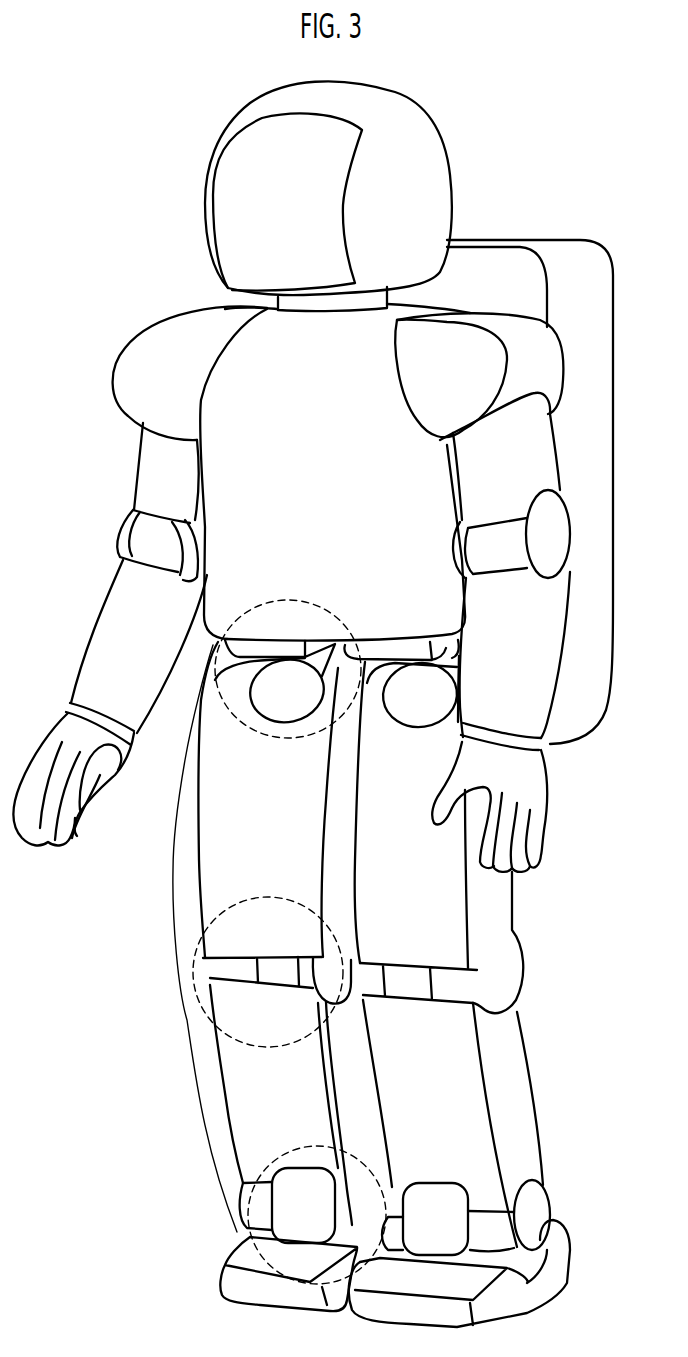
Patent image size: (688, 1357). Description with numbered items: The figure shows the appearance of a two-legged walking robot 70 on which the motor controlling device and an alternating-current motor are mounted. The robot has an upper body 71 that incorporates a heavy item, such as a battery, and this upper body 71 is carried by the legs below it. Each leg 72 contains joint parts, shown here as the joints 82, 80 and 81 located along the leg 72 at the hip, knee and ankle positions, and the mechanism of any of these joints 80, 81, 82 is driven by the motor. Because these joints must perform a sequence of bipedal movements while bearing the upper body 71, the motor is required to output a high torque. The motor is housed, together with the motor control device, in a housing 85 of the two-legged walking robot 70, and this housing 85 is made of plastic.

The two-legged walking robot 70 is at (539, 128).
The upper body 71 is at (352, 488).
The leg 72 is at (179, 968).
The joint 80 is at (265, 896).
The joint 81 is at (293, 1148).
The joint 82 is at (246, 737).
The housing 85 is at (217, 883).